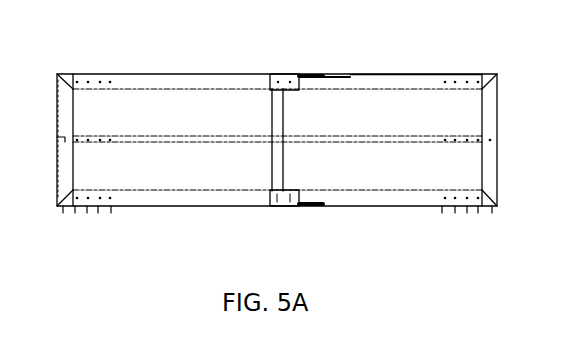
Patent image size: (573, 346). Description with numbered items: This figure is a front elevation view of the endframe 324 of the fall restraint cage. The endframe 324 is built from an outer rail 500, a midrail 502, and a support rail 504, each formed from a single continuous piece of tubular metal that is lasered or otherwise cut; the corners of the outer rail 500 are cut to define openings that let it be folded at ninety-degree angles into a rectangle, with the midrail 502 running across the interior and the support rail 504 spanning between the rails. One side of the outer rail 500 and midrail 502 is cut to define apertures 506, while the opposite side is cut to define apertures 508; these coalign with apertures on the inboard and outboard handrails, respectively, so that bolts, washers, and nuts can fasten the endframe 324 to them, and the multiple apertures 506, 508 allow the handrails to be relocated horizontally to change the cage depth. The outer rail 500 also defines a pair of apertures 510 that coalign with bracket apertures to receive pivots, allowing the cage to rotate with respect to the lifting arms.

The outer rail 500 is at (138, 76).
The endframe 324 is at (389, 74).
The midrail 502 is at (362, 135).
The support rail 504 is at (278, 122).
The apertures 506 is at (486, 92).
The apertures 508 is at (112, 100).
The apertures 510 is at (283, 75).